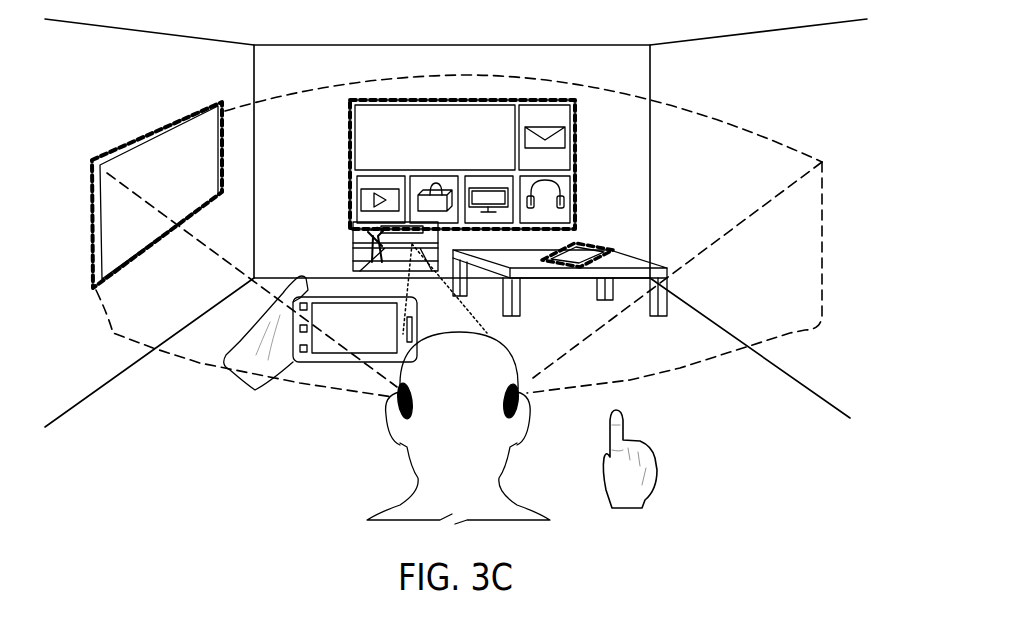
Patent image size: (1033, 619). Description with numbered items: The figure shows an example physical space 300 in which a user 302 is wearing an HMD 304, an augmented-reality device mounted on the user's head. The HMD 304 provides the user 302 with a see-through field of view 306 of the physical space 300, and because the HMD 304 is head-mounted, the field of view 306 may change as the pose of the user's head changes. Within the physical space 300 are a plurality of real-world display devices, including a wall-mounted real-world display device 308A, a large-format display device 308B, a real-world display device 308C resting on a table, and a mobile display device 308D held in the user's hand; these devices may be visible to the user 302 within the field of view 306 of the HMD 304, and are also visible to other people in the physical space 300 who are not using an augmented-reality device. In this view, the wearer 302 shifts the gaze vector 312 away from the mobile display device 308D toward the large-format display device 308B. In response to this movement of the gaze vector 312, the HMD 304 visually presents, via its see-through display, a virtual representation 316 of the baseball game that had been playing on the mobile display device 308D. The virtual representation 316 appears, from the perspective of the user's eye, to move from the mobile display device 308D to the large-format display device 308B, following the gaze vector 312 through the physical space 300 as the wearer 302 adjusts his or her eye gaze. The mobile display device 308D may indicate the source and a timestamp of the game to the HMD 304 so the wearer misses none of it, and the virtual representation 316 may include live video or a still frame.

The physical space 300 is at (603, 34).
The user 302 is at (458, 428).
The HMD 304 is at (393, 398).
The field of view 306 is at (193, 362).
The real-world display device 308A is at (175, 122).
The large-format display device 308B is at (577, 160).
The real-world display device 308C is at (583, 243).
The mobile display device 308D is at (343, 363).
The gaze vector 312 is at (462, 300).
The virtual representation 316 is at (352, 240).